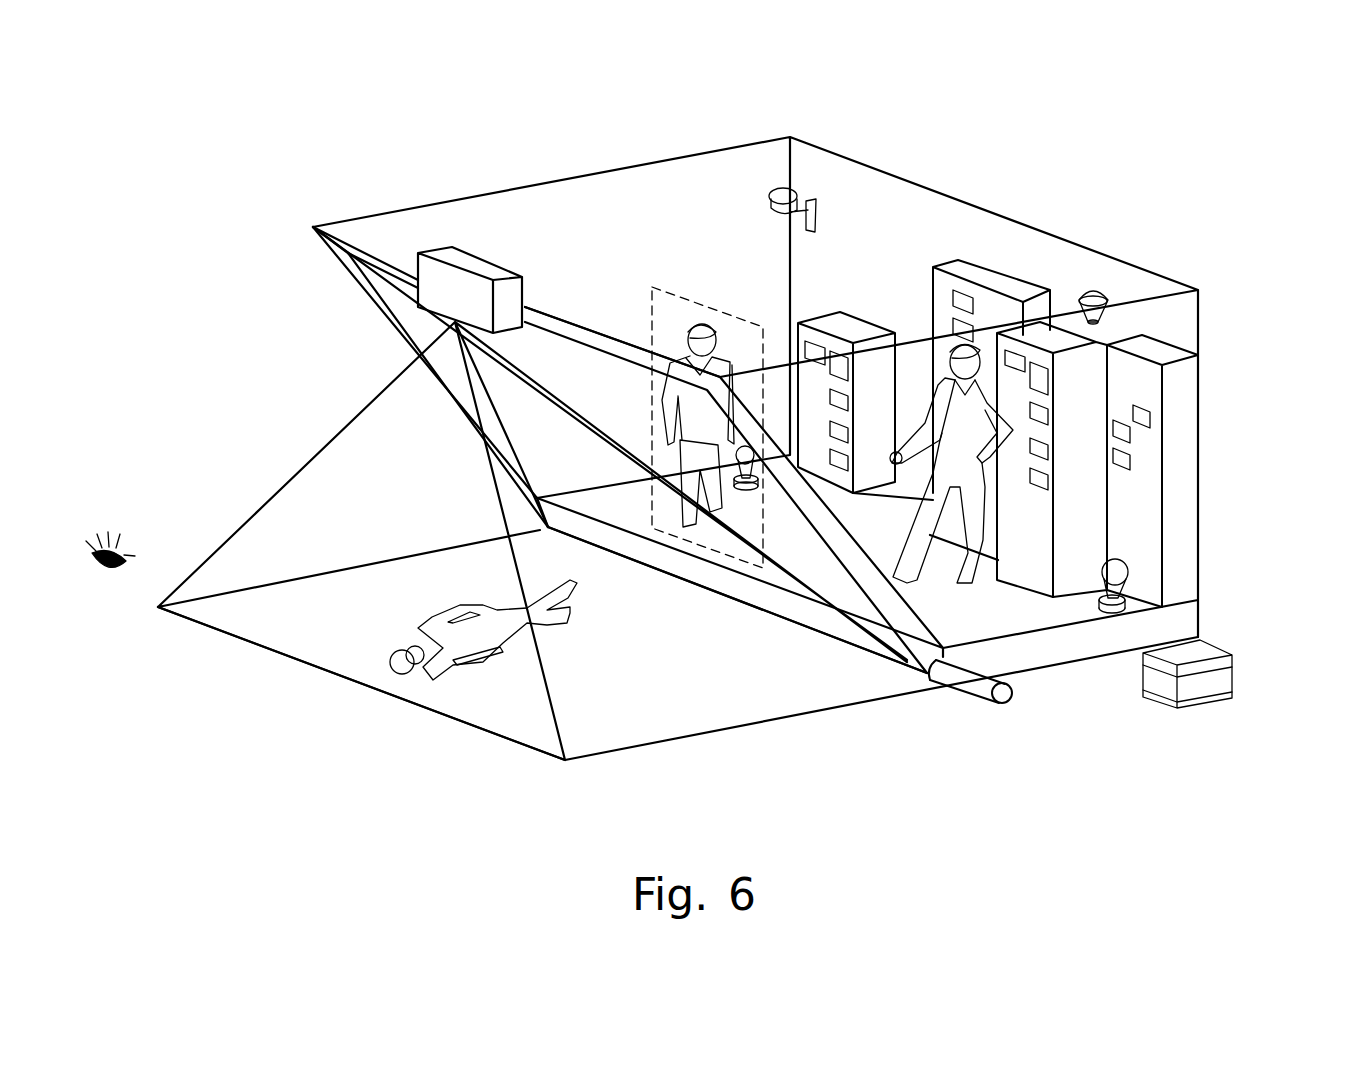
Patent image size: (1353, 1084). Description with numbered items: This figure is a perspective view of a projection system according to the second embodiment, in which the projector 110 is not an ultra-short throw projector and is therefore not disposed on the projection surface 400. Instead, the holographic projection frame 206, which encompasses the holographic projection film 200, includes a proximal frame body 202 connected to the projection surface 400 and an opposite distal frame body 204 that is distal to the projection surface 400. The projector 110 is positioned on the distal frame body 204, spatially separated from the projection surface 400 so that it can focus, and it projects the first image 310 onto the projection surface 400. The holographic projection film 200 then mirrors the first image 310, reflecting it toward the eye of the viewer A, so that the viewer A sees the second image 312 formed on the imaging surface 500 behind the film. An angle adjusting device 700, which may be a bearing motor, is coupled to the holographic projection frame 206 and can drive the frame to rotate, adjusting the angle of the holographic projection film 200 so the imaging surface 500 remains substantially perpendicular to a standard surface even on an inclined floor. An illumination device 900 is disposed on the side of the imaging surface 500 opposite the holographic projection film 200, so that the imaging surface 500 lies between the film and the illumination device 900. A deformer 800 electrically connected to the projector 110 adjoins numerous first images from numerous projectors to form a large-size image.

The projector 110 is at (465, 262).
The holographic projection film 200 is at (605, 461).
The proximal frame body 202 is at (780, 624).
The distal frame body 204 is at (555, 322).
The holographic projection frame 206 is at (327, 268).
The first image 310 is at (485, 667).
The second image 312 is at (702, 326).
The projection surface 400 is at (635, 748).
The imaging surface 500 is at (673, 291).
The angle adjusting device 700 is at (965, 706).
The deformer 800 is at (1233, 676).
The illumination device 900 is at (1117, 593).
The viewer A is at (105, 572).